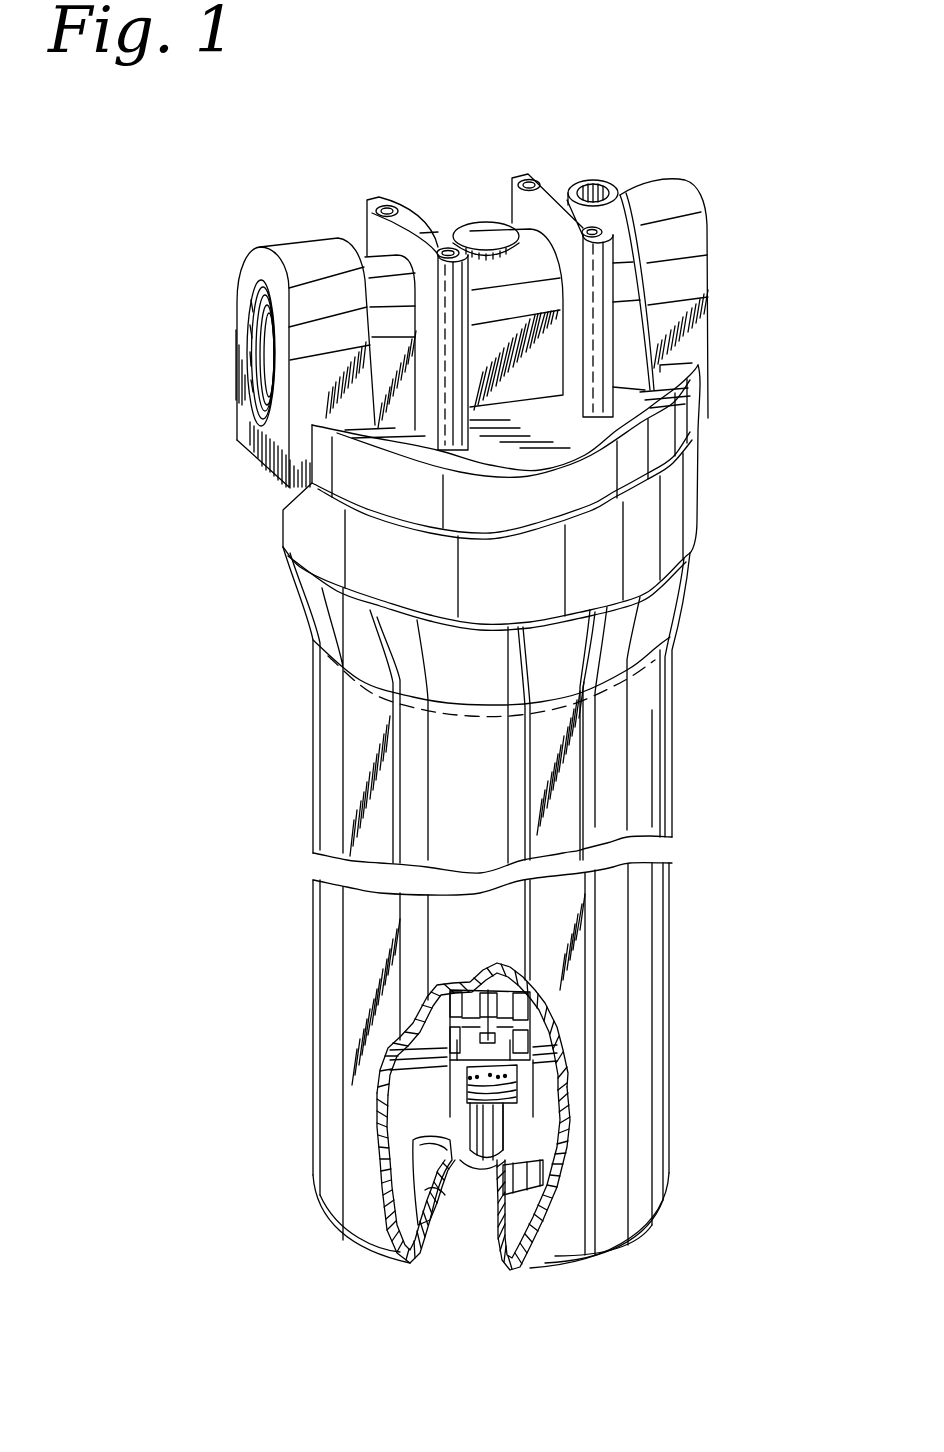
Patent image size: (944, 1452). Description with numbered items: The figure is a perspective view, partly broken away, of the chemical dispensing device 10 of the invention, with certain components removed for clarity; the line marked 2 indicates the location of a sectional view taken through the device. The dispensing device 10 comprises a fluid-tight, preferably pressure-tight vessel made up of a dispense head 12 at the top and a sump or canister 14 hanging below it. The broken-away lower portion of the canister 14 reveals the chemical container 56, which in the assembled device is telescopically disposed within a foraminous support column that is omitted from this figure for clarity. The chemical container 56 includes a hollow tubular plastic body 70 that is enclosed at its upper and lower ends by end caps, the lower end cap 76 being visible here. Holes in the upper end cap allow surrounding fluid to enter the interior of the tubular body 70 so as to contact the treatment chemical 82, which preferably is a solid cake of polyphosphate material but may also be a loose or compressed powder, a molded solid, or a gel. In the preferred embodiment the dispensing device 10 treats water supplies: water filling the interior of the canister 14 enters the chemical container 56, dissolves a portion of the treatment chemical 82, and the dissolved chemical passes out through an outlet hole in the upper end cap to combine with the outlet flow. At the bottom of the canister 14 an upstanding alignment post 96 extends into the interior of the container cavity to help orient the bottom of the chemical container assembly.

The section line 2- 2 is at (792, 267).
The dispensing device 10 is at (683, 146).
The dispense head 12 is at (283, 243).
The canister 14 is at (308, 784).
The chemical container 56 is at (577, 1028).
The tubular body 70 is at (450, 1057).
The lower end cap 76 is at (455, 1078).
The treatment chemical 82 is at (463, 1088).
The alignment post 96 is at (487, 1168).